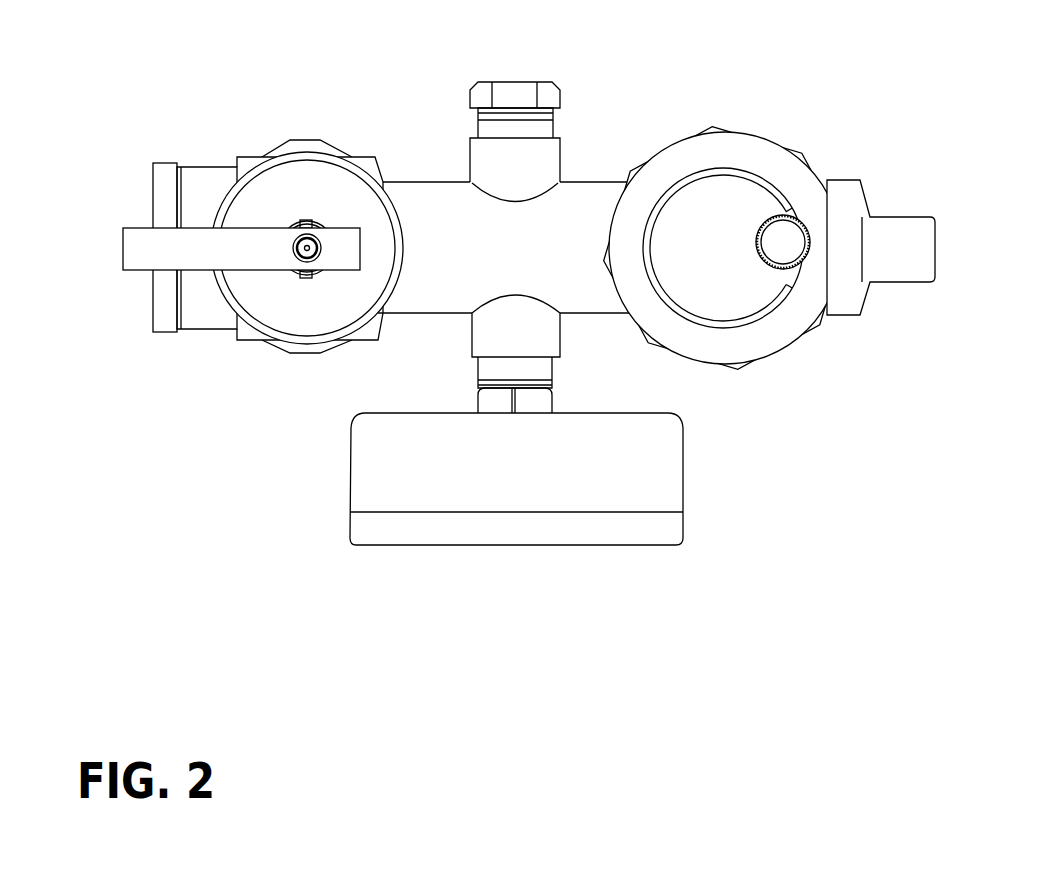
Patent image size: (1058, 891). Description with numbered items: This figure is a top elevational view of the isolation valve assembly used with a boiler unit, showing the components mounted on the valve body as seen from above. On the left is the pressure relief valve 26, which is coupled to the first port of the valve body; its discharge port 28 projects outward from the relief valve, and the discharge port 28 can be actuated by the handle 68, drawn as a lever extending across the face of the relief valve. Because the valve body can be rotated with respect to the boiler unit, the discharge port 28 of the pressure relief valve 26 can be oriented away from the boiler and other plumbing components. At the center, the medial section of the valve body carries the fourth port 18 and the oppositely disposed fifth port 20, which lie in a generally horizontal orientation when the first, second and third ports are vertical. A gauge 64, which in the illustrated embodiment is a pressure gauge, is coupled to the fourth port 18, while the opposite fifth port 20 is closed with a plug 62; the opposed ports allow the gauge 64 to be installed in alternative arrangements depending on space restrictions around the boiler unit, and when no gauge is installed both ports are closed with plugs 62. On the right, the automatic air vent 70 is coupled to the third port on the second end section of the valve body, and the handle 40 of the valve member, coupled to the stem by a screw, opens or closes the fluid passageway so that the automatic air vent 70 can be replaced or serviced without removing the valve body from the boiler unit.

The fourth port 18 is at (545, 337).
The fifth port 20 is at (537, 162).
The pressure relief valve 26 is at (212, 187).
The discharge port 28 is at (153, 197).
The handle 40 is at (900, 232).
The plug 62 is at (517, 95).
The gauge 64 is at (563, 480).
The handle 68 is at (148, 248).
The automatic air vent 70 is at (742, 185).